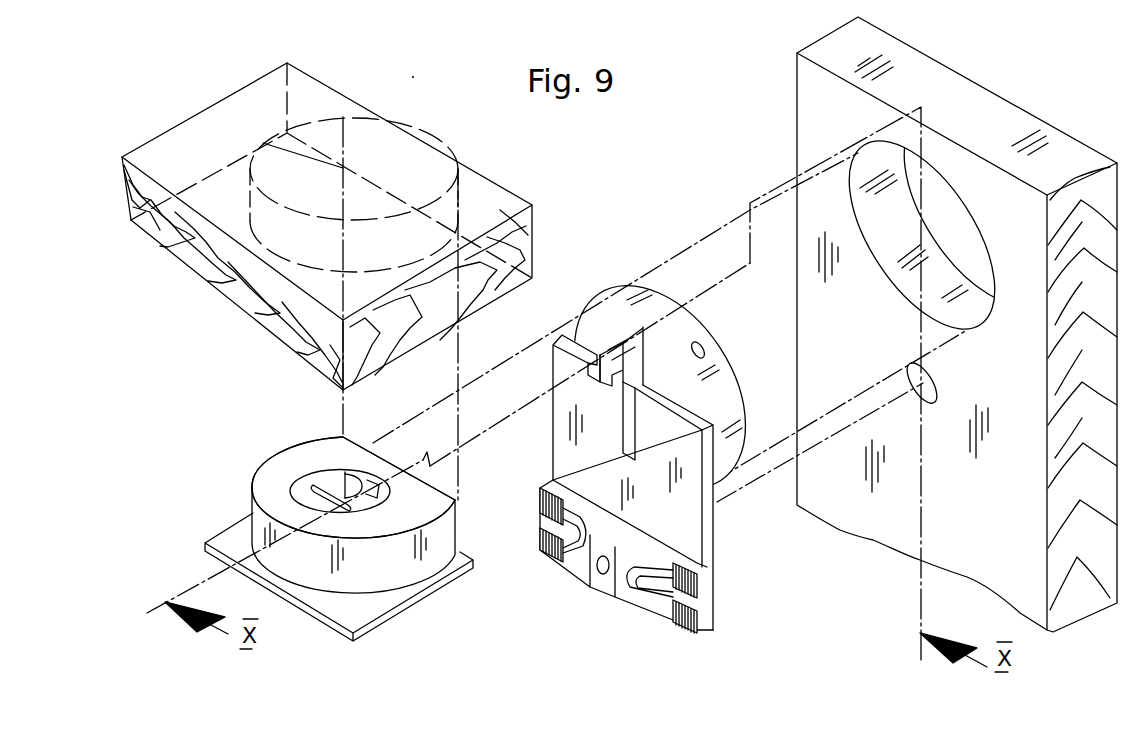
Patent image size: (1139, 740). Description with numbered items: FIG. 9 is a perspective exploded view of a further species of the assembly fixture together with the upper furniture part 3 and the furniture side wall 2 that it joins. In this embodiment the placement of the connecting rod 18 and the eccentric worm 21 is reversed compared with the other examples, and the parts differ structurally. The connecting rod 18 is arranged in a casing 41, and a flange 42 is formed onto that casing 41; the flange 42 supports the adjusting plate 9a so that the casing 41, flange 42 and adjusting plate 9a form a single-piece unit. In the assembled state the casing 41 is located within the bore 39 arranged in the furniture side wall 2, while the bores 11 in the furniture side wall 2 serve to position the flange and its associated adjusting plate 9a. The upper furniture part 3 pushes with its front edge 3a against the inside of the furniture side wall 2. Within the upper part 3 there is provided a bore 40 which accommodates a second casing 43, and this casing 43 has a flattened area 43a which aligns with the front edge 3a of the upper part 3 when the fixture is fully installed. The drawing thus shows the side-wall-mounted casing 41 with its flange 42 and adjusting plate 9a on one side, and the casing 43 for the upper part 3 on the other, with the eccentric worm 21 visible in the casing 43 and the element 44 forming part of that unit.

The furniture side wall 2 is at (1080, 147).
The upper furniture part 3 is at (513, 190).
The front edge 3a is at (532, 241).
The adjusting plate 9a is at (622, 597).
The bores 11 is at (937, 383).
The connecting rod 18 is at (643, 327).
The eccentric worm 21 is at (393, 497).
The bore 39 is at (957, 203).
The bore 40 is at (472, 164).
The casing 41 is at (720, 353).
The flange 42 is at (714, 532).
The casing 43 is at (432, 553).
The flattened area 43a is at (457, 525).
The base plate 44 is at (380, 618).